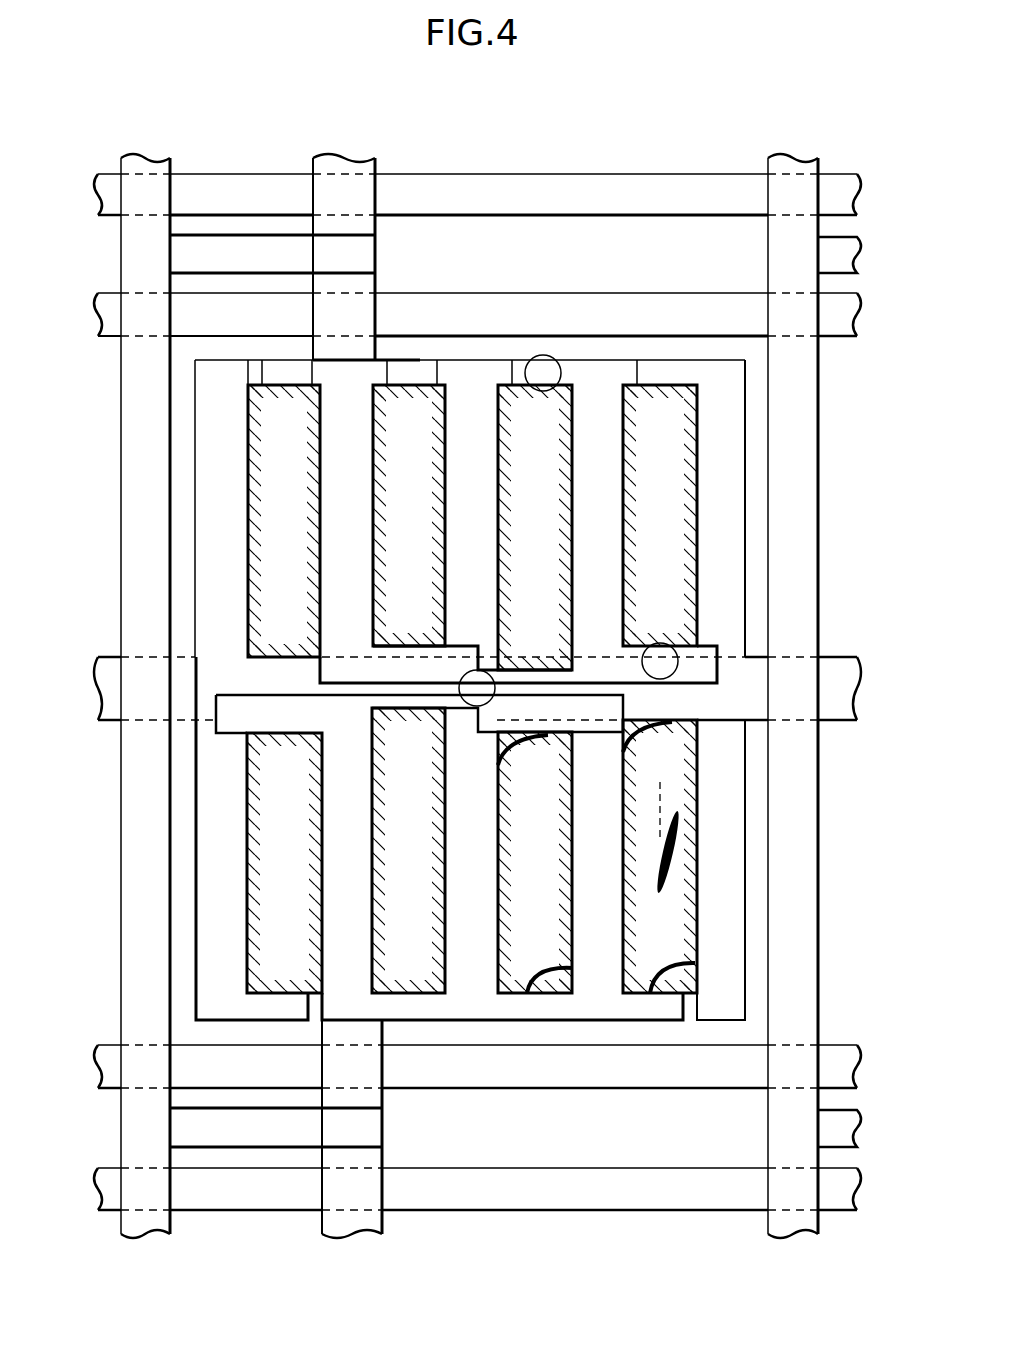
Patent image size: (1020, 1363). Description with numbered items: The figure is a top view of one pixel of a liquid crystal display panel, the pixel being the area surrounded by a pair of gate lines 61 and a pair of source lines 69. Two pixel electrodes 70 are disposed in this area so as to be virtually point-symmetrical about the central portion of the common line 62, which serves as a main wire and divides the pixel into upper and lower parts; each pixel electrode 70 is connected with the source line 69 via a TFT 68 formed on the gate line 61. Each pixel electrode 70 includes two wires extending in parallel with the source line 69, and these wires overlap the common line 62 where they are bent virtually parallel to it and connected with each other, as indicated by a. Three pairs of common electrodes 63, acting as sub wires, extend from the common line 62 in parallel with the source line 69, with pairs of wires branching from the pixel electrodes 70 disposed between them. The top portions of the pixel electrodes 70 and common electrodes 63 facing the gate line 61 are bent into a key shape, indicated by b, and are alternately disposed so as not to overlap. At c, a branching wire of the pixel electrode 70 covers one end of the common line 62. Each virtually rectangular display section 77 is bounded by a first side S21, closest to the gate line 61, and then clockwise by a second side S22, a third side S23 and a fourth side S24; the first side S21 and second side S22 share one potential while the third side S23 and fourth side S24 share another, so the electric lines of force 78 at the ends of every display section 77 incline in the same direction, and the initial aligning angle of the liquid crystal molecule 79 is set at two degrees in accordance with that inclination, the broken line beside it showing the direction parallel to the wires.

The gate line 61 is at (850, 315).
The common line 62 is at (735, 692).
The common electrode 63 is at (723, 585).
The TFT 68 is at (343, 305).
The source line 69 is at (148, 240).
The pixel electrode 70 is at (600, 467).
The display section 77 is at (277, 508).
The electric lines of force 78 is at (683, 935).
The liquid crystal molecule 79 is at (668, 872).
The bent connecting portion of pixel electrode wires a is at (718, 585).
The bent top portion b is at (543, 355).
The covering portion of branching wire c is at (678, 662).
The first side S21 is at (287, 385).
The second side S22 is at (288, 565).
The third side S23 is at (290, 636).
The fourth side S24 is at (243, 467).